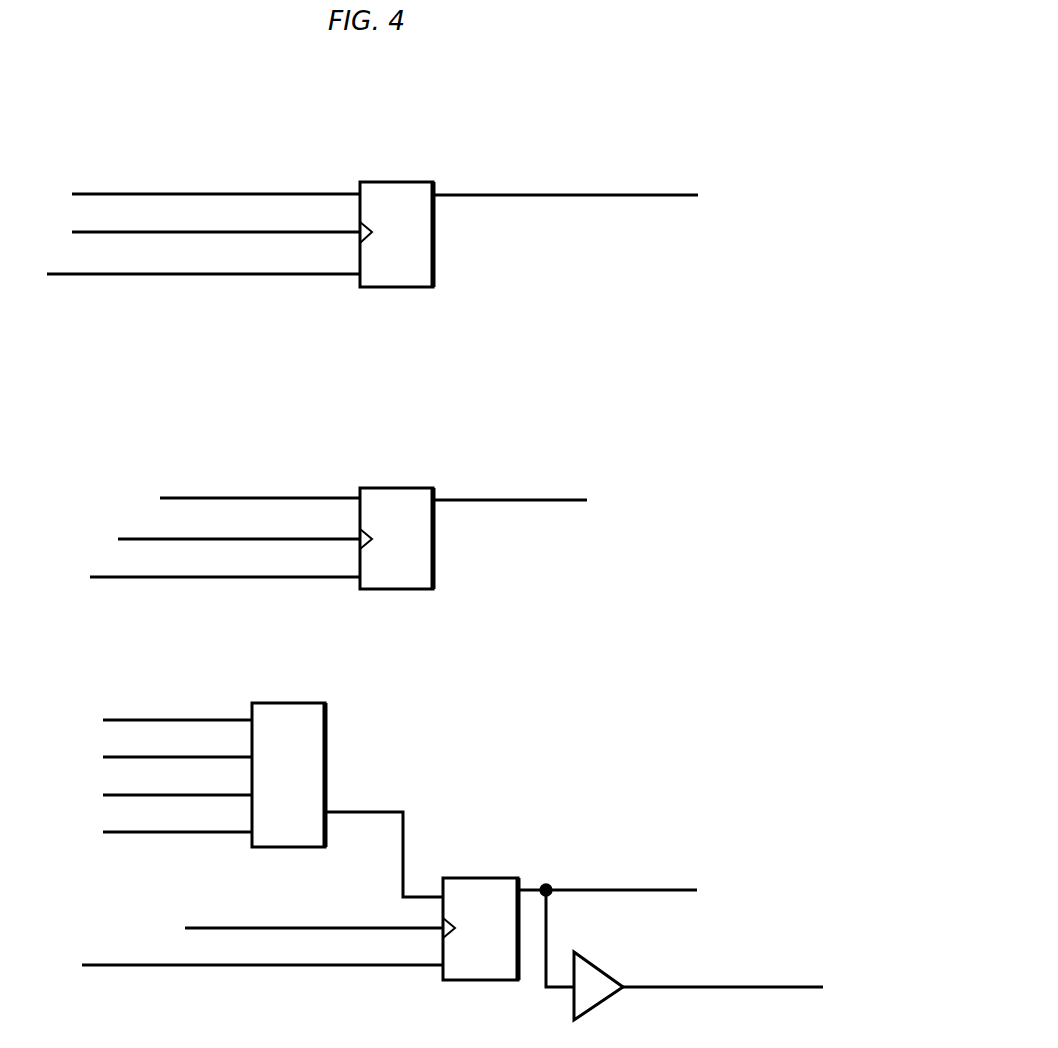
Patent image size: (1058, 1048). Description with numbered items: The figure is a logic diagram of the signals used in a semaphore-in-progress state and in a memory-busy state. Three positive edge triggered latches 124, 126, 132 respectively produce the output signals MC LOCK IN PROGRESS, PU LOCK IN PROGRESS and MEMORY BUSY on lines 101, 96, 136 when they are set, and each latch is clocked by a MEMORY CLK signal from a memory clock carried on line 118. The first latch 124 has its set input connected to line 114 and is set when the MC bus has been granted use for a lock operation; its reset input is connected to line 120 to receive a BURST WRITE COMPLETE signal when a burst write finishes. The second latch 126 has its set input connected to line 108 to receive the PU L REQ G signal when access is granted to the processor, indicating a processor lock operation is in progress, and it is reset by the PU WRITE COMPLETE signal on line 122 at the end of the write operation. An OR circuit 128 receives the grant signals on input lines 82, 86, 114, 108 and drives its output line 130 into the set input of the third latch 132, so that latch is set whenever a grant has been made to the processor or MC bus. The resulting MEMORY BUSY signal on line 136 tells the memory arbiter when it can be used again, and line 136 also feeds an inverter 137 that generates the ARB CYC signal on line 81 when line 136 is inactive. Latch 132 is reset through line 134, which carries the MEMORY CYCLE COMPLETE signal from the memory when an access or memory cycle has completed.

The input line 82 is at (103, 720).
The input line 86 is at (103, 757).
The line 96 is at (540, 501).
The line 101 is at (583, 196).
The line 108 is at (180, 498).
The line 114 is at (177, 193).
The MEMORY CLK signal line 118 is at (153, 232).
The line 120 is at (260, 275).
The line 122 is at (308, 578).
The positive edge triggered latch 124 is at (418, 182).
The positive edge triggered latch 126 is at (418, 488).
The OR circuit 128 is at (312, 703).
The output line 130 is at (353, 812).
The positive edge triggered latch 132 is at (503, 877).
The line 134 is at (360, 966).
The line 136 is at (585, 891).
The inverter 137 is at (593, 960).
The line 81 is at (730, 988).